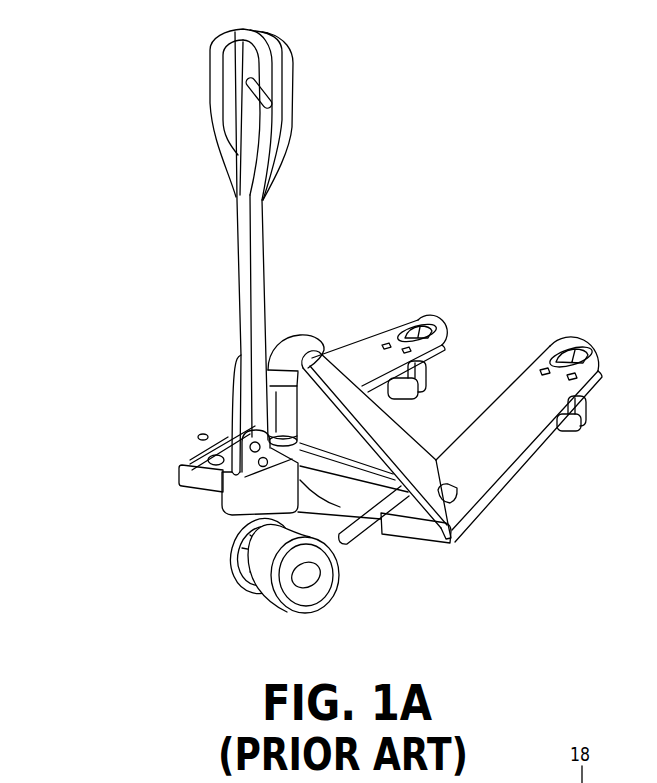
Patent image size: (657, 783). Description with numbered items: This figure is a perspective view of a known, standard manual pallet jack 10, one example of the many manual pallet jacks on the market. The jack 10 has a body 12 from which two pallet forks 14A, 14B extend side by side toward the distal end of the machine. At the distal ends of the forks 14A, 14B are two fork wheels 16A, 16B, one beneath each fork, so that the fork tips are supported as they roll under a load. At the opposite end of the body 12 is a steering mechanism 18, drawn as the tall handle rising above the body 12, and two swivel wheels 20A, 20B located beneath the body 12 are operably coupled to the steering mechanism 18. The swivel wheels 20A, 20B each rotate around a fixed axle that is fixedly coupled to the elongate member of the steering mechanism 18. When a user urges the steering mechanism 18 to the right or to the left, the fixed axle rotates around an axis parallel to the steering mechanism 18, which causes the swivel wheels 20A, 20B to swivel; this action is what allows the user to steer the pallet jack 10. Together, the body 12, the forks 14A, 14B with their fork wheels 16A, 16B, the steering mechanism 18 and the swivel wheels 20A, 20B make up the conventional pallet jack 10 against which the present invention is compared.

The pallet jack 10 is at (124, 108).
The steering mechanism 18 is at (196, 262).
The body 12 is at (436, 462).
The pallet fork 14A is at (358, 350).
The pallet fork 14B is at (510, 393).
The fork wheel 16A is at (402, 386).
The fork wheel 16B is at (568, 430).
The swivel wheel 20A is at (237, 537).
The swivel wheel 20B is at (344, 568).